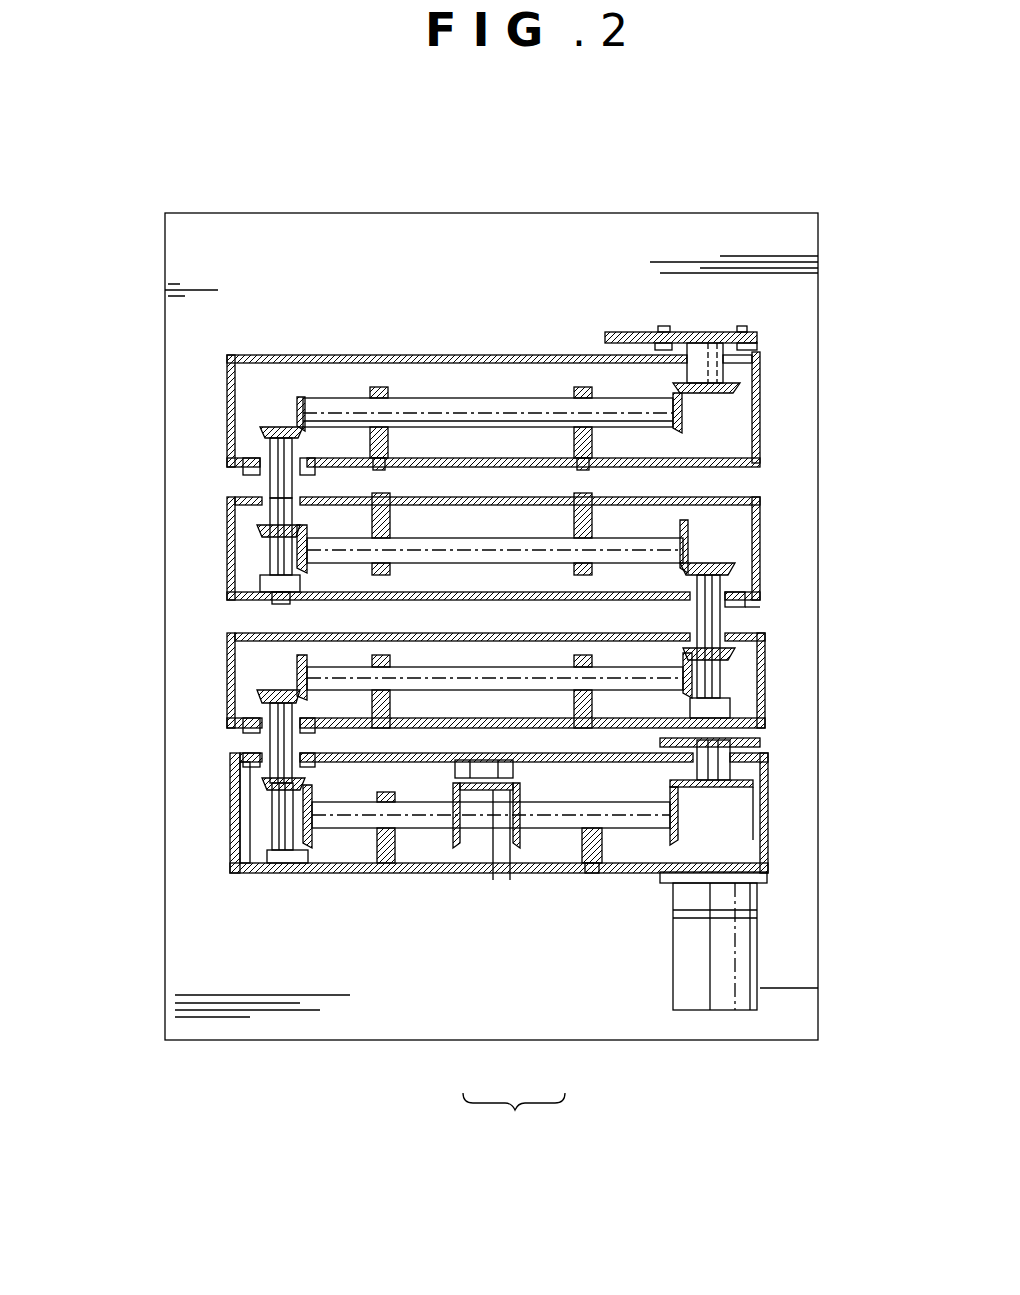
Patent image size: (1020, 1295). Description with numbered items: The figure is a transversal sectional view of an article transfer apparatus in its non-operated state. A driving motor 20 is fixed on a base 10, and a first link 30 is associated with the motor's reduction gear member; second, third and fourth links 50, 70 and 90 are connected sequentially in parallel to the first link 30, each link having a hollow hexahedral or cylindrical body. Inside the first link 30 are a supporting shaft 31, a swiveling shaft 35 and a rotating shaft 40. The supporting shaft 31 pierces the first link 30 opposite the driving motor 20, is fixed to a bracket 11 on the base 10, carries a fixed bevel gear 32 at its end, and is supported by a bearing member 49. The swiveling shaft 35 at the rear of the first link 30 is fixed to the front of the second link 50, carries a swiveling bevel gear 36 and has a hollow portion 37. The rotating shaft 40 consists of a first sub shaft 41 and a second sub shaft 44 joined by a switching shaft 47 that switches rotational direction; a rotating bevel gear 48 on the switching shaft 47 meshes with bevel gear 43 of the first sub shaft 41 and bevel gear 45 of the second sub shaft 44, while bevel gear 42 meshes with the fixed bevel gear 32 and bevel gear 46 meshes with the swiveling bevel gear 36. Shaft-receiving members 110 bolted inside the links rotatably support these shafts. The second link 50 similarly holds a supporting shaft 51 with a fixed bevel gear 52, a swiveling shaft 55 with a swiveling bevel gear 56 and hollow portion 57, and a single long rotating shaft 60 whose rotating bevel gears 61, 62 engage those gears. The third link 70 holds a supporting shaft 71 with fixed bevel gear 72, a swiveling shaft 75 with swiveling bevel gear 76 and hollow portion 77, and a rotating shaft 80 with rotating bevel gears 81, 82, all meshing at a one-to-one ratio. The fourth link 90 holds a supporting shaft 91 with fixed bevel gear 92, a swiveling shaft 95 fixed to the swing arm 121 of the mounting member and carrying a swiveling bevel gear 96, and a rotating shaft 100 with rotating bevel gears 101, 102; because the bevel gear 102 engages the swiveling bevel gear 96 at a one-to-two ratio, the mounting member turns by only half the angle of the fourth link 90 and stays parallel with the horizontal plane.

The base 10 is at (312, 1040).
The bracket 11 is at (765, 730).
The driving motor 20 is at (752, 1000).
The first link 30 is at (768, 855).
The supporting shaft 31 is at (750, 772).
The fixed bevel gear 32 is at (755, 800).
The swiveling shaft 35 is at (268, 775).
The swiveling bevel gear 36 is at (265, 835).
The hollow portion 37 is at (280, 868).
The rotating shaft 40 is at (514, 1115).
The first sub shaft 41 is at (578, 830).
The bevel gear 42 is at (672, 842).
The bevel gear 43 is at (516, 850).
The second sub shaft 44 is at (365, 830).
The bevel gear 45 is at (456, 848).
The bevel gear 46 is at (316, 873).
The switching shaft 47 is at (496, 885).
The rotating bevel gear 48 is at (520, 754).
The bearing member 49 is at (250, 482).
The second link 50 is at (765, 690).
The supporting shaft 51 is at (268, 710).
The fixed bevel gear 52 is at (262, 692).
The swiveling shaft 55 is at (735, 628).
The swiveling bevel gear 56 is at (766, 655).
The hollow portion 57 is at (760, 612).
The rotating shaft 60 is at (518, 667).
The rotating bevel gear 61 is at (298, 660).
The rotating bevel gear 62 is at (685, 700).
The third link 70 is at (760, 520).
The supporting shaft 71 is at (760, 582).
The fixed bevel gear 72 is at (760, 556).
The swiveling shaft 75 is at (258, 530).
The swiveling bevel gear 76 is at (262, 552).
The hollow portion 77 is at (268, 502).
The rotating shaft 80 is at (517, 538).
The rotating bevel gear 81 is at (686, 520).
The rotating bevel gear 82 is at (260, 580).
The fourth link 90 is at (760, 432).
The supporting shaft 91 is at (255, 465).
The fixed bevel gear 92 is at (258, 430).
The swiveling shaft 95 is at (687, 370).
The swiveling bevel gear 96 is at (760, 380).
The rotating shaft 100 is at (428, 400).
The rotating bevel gear 101 is at (300, 397).
The rotating bevel gear 102 is at (670, 396).
The shaft-receiving members 110 is at (380, 387).
The swing arm 121 is at (760, 335).